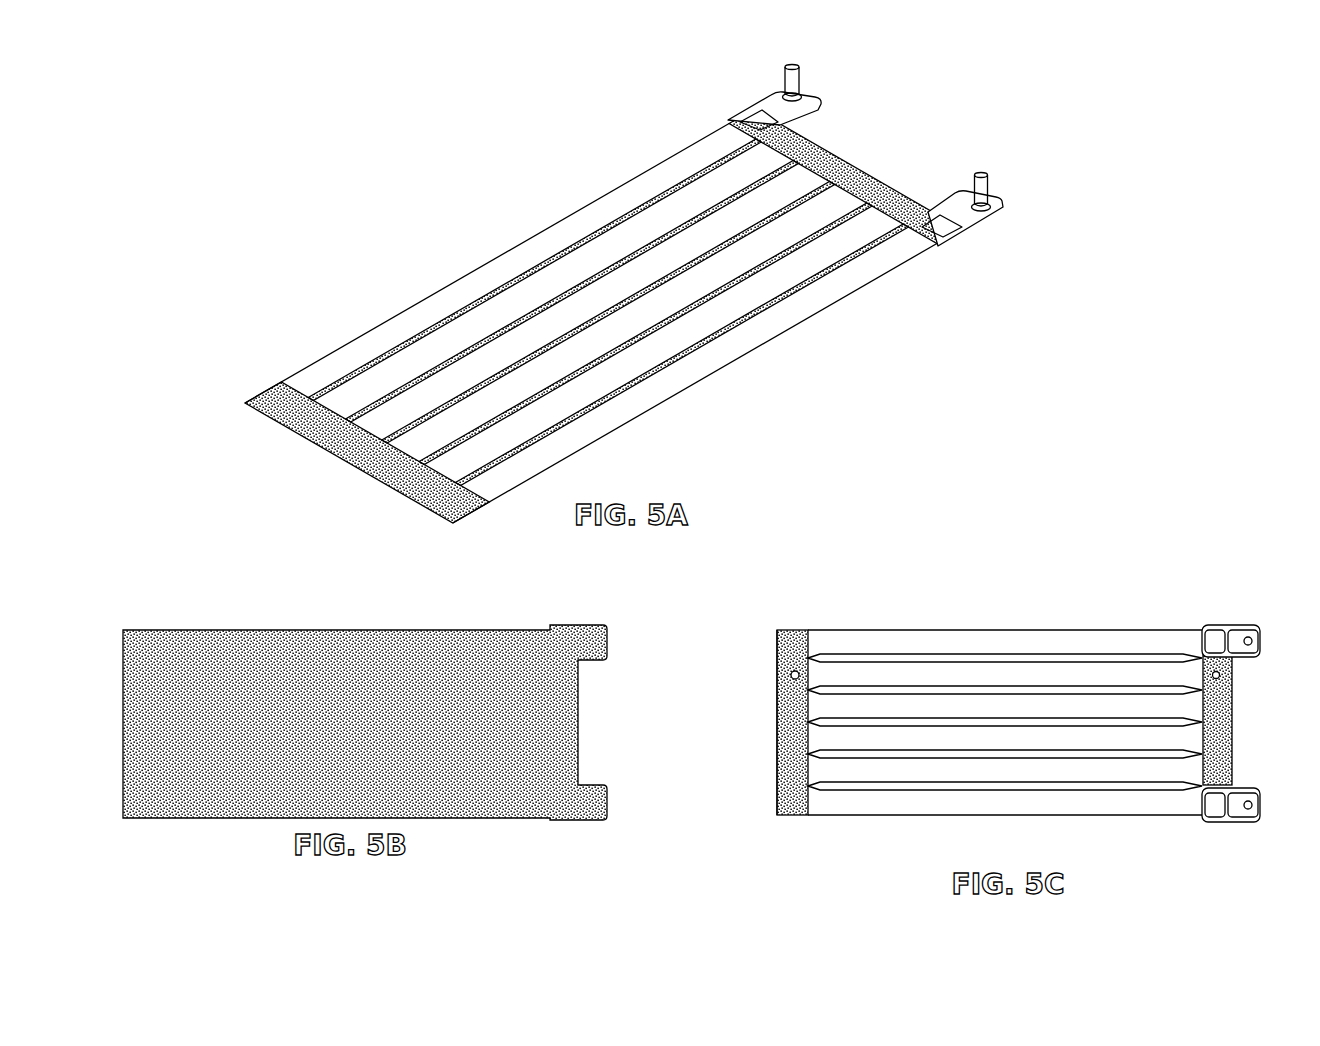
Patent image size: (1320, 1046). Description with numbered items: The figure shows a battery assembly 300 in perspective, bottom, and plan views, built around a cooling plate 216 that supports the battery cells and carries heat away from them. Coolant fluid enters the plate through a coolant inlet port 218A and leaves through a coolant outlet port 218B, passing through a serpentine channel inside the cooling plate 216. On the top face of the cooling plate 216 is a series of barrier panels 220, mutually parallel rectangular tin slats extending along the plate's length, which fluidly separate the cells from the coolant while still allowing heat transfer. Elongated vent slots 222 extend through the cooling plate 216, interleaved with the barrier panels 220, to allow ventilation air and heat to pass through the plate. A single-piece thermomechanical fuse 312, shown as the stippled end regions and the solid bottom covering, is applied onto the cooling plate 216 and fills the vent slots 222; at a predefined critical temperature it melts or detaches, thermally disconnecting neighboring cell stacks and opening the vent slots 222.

In FIG. 5A, the battery assembly 300 is at (374, 96).
In FIG. 5A, the cooling plate 216 is at (330, 229).
In FIG. 5B, the cooling plate 216 is at (292, 586).
In FIG. 5C, the cooling plate 216 is at (906, 582).
In FIG. 5A, the coolant inlet port 218A is at (803, 64).
In FIG. 5C, the coolant inlet port 218A is at (1243, 628).
In FIG. 5A, the coolant outlet port 218B is at (990, 176).
In FIG. 5A, the barrier panels 220 is at (832, 253).
In FIG. 5C, the barrier panels 220 is at (835, 638).
In FIG. 5C, the vent slots 222 is at (872, 654).
In FIG. 5A, the thermomechanical fuse 312 is at (275, 390).
In FIG. 5B, the thermomechanical fuse 312 is at (188, 629).